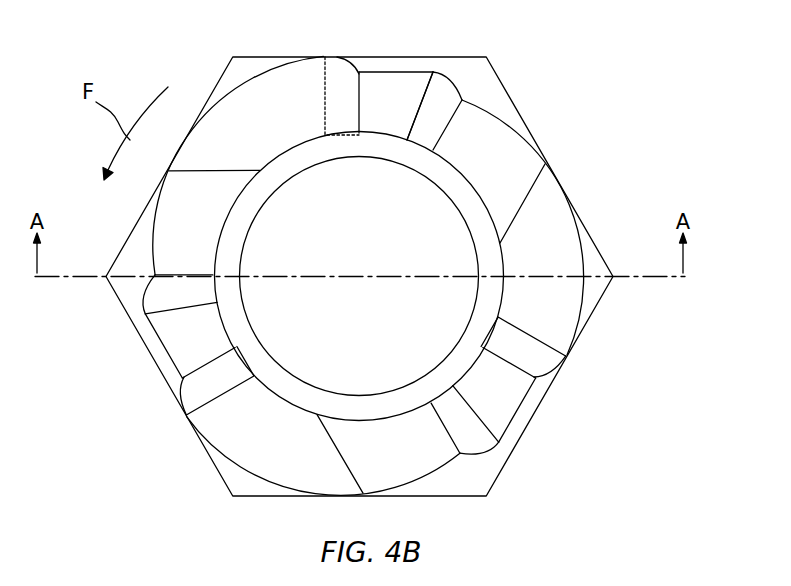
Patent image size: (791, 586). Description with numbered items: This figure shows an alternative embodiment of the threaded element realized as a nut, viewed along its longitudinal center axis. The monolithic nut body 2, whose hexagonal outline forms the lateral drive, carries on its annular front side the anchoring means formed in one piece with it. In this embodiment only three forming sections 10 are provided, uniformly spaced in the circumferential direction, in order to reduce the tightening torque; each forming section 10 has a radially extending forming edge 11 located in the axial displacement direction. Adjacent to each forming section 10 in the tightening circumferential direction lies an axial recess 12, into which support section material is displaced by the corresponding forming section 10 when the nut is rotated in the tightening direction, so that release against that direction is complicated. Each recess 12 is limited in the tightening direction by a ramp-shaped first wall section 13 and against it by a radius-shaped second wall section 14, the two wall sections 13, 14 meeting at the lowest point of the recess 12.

The nut body 2 is at (527, 128).
The forming section 10 is at (455, 83).
The forming edge 11 is at (357, 96).
The axial recess 12 is at (388, 110).
The first wall section 13 is at (373, 95).
The second wall section 14 is at (440, 100).